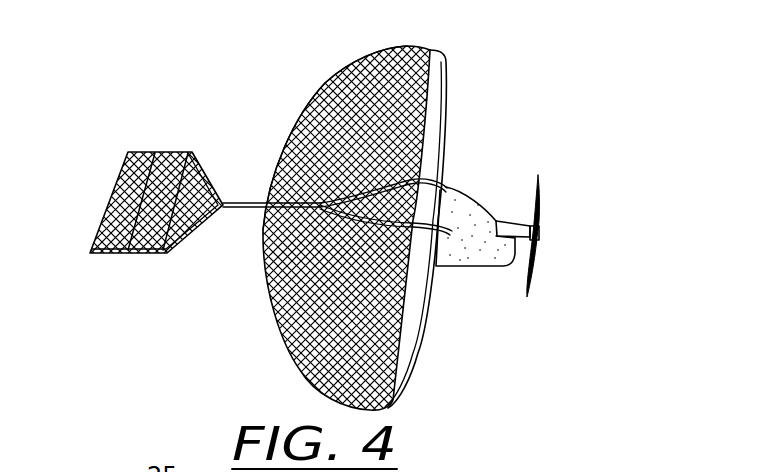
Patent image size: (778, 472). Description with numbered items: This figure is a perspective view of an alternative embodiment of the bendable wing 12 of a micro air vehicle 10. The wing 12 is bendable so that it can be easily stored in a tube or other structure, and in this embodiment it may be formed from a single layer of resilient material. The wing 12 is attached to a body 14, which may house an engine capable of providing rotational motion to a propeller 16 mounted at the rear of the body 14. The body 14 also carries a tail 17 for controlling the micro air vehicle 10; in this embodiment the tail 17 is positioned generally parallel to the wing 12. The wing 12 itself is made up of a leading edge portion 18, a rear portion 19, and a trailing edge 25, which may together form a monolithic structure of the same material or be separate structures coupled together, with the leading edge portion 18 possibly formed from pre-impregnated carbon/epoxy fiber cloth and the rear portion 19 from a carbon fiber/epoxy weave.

The micro air vehicle 10 is at (513, 125).
The wing 12 is at (453, 55).
The body 14 is at (485, 265).
The propeller 16 is at (540, 217).
The tail 17 is at (122, 172).
The leading edge portion 18 is at (447, 152).
The rear portion 19 is at (340, 132).
The trailing edge 25 is at (285, 150).